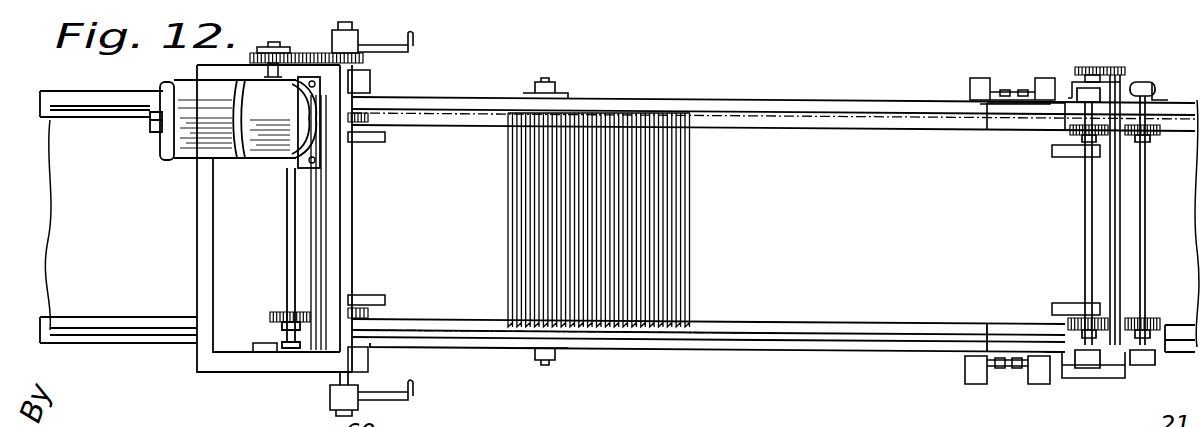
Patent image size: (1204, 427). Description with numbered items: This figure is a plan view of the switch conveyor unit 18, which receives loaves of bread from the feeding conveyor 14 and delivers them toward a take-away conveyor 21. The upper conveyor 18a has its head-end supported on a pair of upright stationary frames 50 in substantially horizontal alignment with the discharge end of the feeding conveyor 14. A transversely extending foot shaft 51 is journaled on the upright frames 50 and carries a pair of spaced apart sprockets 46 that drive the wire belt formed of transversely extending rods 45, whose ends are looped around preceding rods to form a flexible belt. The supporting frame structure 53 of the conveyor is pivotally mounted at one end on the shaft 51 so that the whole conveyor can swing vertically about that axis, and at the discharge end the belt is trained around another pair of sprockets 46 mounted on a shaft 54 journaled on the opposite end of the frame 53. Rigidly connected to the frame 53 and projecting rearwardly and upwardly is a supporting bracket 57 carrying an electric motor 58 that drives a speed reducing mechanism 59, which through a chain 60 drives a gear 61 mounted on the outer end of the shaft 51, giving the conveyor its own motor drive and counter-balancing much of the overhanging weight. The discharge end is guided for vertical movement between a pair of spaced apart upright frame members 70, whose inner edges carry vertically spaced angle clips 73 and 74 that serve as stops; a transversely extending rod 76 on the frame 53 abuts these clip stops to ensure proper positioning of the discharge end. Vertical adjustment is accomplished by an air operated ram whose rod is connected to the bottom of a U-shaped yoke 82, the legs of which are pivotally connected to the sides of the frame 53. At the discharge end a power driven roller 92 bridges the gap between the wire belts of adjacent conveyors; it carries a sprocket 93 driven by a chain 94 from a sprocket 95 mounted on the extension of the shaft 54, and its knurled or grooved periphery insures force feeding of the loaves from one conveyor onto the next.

The feeding conveyor 14 is at (161, 298).
The switch conveyor unit 18 is at (856, 311).
The upper conveyor 18a is at (709, 337).
The take-away conveyor 21 is at (1172, 106).
The rods 45 is at (688, 268).
The sprocket wheels 46 is at (366, 145).
The upright stationary frames 50 is at (390, 396).
The foot shaft 51 is at (340, 373).
The supporting frame structure 53 is at (900, 344).
The shaft 54 is at (1085, 180).
The supporting bracket 57 is at (200, 236).
The electric motor 58 is at (198, 143).
The speed reducing mechanism 59 is at (276, 146).
The chain 60 is at (313, 28).
The gear 61 is at (355, 60).
The upright frame members 70 is at (1030, 85).
The angle clip 73 is at (975, 372).
The angle clip 74 is at (1044, 380).
The rod 76 is at (1040, 106).
The yoke 82 is at (548, 358).
The roller 92 is at (313, 242).
The sprocket 93 is at (1125, 84).
The chain 94 is at (1108, 68).
The sprocket 95 is at (1078, 52).